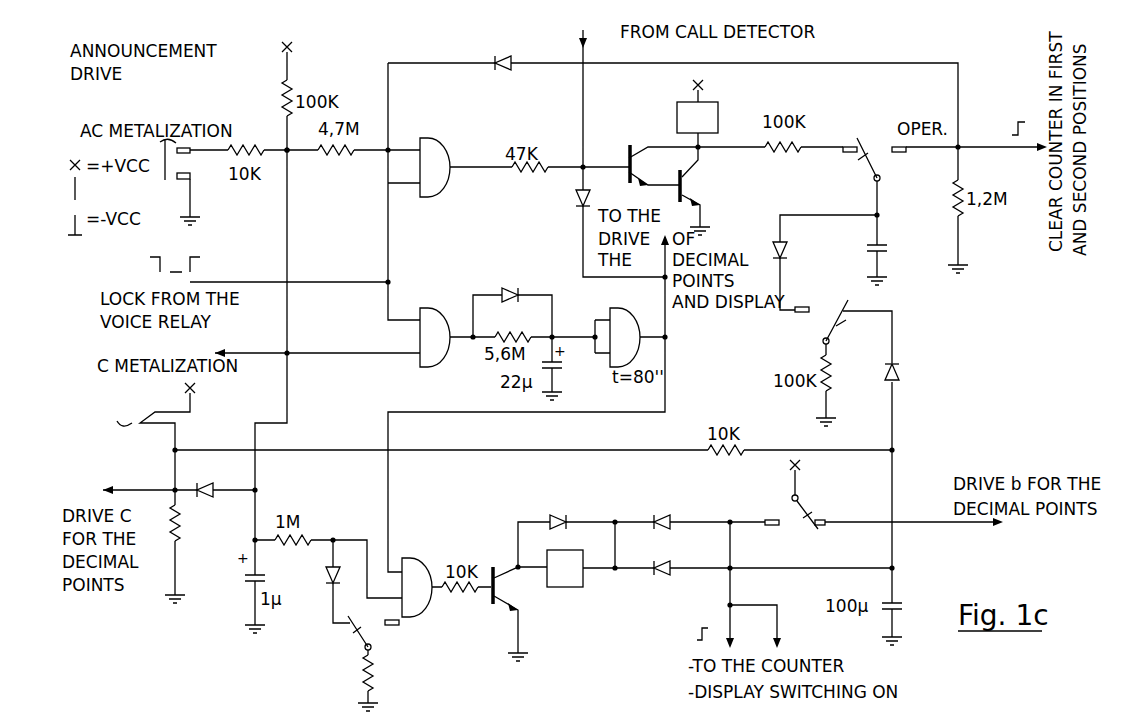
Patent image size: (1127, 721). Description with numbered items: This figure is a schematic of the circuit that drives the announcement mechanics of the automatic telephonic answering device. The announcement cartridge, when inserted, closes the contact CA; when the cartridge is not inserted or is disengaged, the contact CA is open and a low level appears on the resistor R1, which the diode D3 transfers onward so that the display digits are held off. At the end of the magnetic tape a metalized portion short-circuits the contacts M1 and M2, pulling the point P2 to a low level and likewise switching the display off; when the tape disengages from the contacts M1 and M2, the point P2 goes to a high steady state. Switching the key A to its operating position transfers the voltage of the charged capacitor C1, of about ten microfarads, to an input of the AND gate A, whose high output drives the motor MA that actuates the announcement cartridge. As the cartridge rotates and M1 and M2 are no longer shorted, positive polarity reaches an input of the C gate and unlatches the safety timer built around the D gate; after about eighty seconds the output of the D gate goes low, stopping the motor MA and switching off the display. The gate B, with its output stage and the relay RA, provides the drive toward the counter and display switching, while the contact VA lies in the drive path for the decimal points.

The contact M1 is at (162, 159).
The contact M2 is at (198, 195).
The point P2 is at (289, 152).
The AND gate A is at (432, 164).
The motor MA is at (697, 117).
The capacitor C1 is at (891, 250).
The contact CA is at (119, 435).
The C gate C is at (432, 332).
The D gate D is at (596, 475).
The diode D3 is at (232, 470).
The resistor R1 is at (176, 538).
The gate B is at (417, 587).
The relay RA is at (565, 568).
The contact VA is at (795, 525).